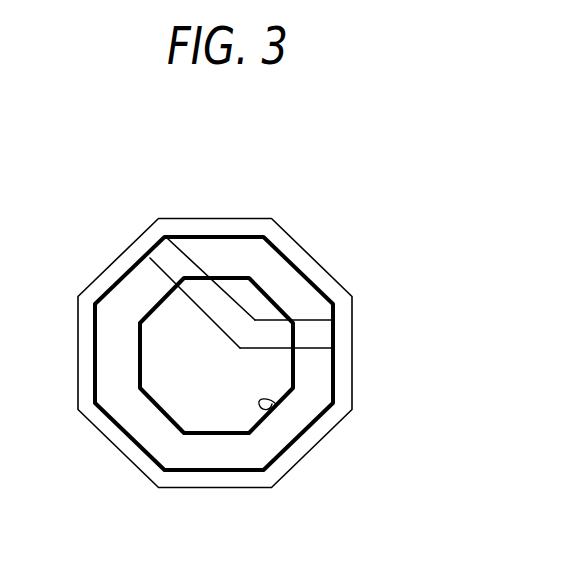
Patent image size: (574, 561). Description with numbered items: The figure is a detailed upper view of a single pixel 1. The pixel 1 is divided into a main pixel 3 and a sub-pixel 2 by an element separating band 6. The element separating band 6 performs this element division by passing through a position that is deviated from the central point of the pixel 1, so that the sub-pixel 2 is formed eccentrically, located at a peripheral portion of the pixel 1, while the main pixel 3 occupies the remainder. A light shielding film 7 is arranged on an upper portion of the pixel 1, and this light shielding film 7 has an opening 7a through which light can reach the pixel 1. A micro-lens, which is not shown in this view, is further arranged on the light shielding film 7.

The pixel 1 is at (208, 160).
The sub-pixel 2 is at (214, 256).
The main pixel 3 is at (135, 292).
The element separating band 6 is at (283, 337).
The light shielding film 7 is at (233, 458).
The opening 7a is at (277, 405).